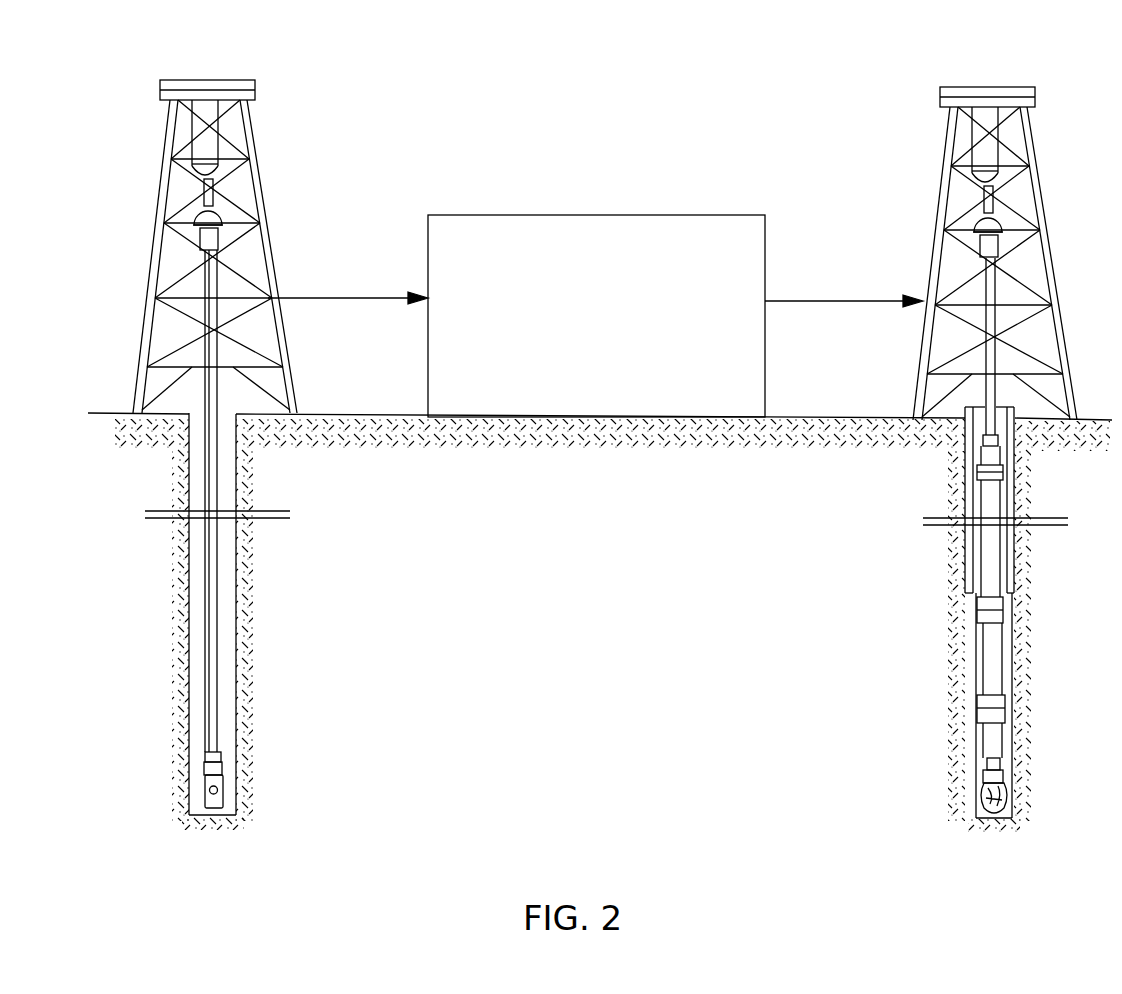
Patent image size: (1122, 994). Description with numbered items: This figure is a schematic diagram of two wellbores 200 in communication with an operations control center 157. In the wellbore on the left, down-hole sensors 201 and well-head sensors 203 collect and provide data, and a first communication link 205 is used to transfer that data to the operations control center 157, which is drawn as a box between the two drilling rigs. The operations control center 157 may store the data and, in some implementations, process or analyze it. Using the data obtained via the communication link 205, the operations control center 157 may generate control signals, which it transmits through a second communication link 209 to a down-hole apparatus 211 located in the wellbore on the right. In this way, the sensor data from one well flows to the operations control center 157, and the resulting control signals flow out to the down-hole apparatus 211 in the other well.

The two wellbores 200 is at (694, 69).
The operations control center 157 is at (596, 316).
The down-hole sensors 201 is at (205, 780).
The well-head sensors 203 is at (207, 461).
The communication link 205 is at (331, 296).
The communication link 209 is at (825, 299).
The down-hole apparatus 211 is at (983, 745).